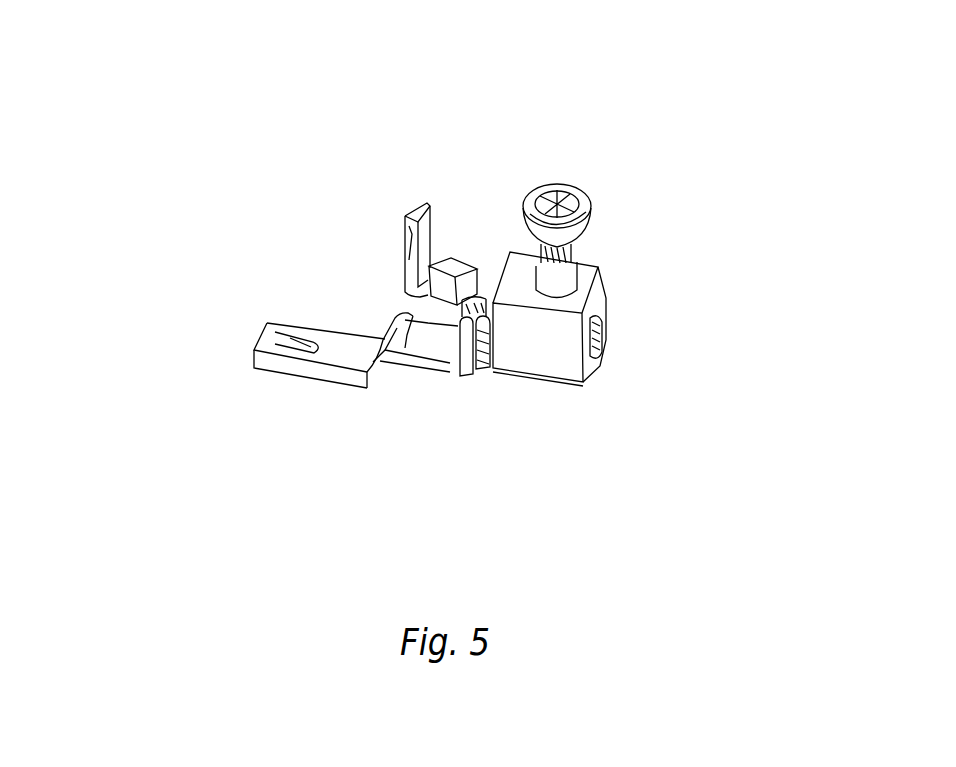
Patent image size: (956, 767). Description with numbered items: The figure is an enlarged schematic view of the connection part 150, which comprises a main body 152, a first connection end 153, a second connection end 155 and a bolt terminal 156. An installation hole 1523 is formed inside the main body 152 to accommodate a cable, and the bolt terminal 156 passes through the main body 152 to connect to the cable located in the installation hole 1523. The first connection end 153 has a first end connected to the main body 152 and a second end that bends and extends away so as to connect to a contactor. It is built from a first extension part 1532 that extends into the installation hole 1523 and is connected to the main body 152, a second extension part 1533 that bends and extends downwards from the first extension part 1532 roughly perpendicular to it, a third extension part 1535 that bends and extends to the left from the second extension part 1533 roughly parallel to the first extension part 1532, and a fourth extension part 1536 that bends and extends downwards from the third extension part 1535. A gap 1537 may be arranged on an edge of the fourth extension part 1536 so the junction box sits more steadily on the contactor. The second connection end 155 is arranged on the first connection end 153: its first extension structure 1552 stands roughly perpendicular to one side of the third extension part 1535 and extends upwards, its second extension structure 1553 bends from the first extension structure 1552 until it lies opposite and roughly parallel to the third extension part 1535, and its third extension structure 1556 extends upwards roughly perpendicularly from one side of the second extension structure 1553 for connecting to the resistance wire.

The connection part 150 is at (112, 227).
The main body 152 is at (598, 275).
The installation hole 1523 is at (587, 341).
The first connection end 153 is at (280, 525).
The first extension part 1532 is at (489, 330).
The second extension part 1533 is at (466, 352).
The third extension part 1535 is at (435, 348).
The fourth extension part 1536 is at (347, 366).
The gap 1537 is at (287, 347).
The second connection end 155 is at (363, 104).
The first extension structure 1552 is at (462, 316).
The second extension structure 1553 is at (450, 280).
The third extension structure 1556 is at (417, 213).
The bolt terminal 156 is at (590, 225).